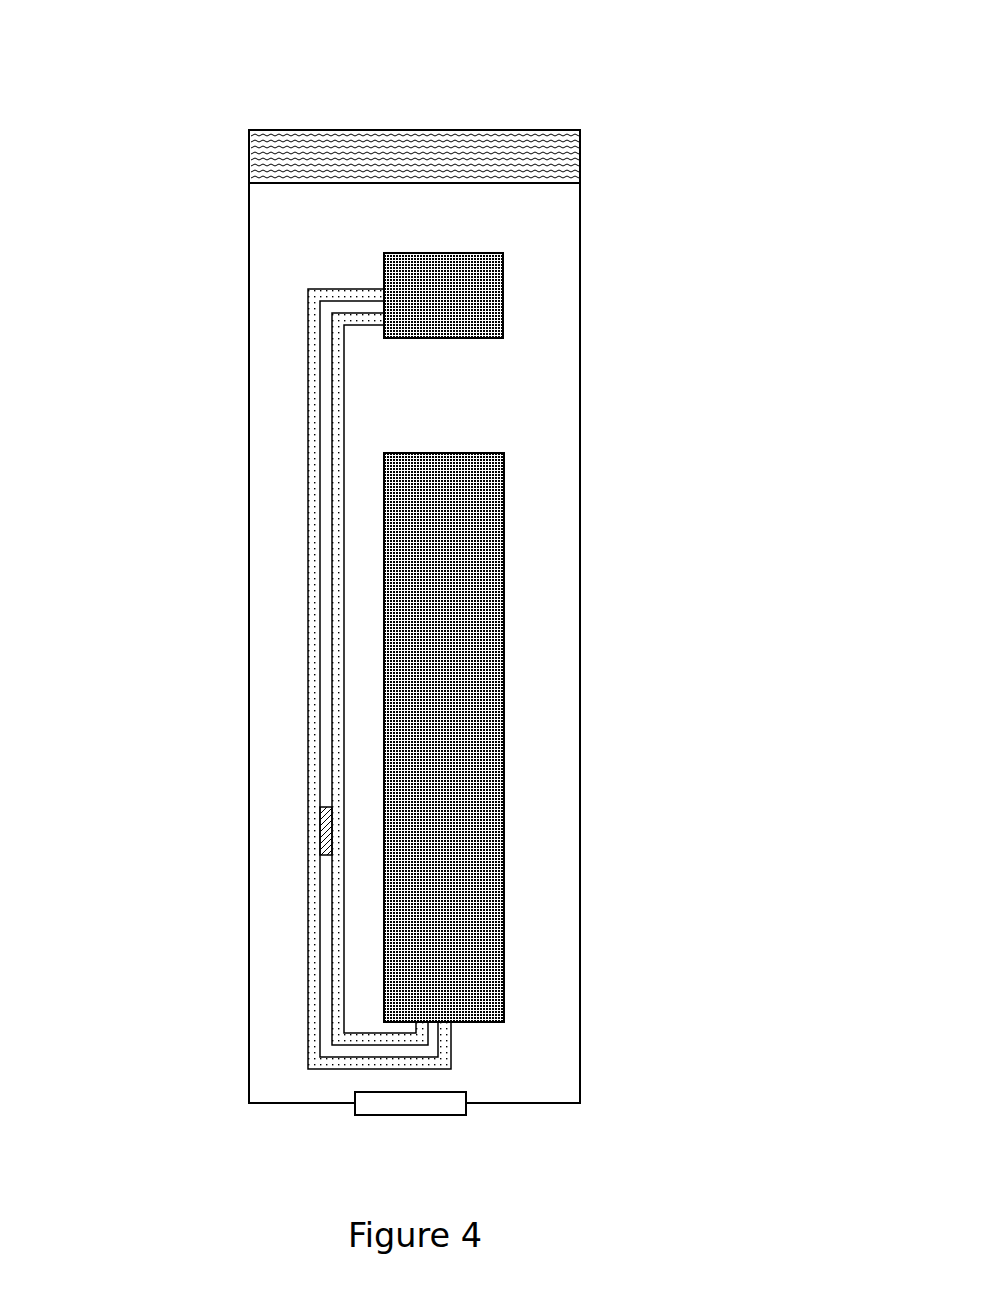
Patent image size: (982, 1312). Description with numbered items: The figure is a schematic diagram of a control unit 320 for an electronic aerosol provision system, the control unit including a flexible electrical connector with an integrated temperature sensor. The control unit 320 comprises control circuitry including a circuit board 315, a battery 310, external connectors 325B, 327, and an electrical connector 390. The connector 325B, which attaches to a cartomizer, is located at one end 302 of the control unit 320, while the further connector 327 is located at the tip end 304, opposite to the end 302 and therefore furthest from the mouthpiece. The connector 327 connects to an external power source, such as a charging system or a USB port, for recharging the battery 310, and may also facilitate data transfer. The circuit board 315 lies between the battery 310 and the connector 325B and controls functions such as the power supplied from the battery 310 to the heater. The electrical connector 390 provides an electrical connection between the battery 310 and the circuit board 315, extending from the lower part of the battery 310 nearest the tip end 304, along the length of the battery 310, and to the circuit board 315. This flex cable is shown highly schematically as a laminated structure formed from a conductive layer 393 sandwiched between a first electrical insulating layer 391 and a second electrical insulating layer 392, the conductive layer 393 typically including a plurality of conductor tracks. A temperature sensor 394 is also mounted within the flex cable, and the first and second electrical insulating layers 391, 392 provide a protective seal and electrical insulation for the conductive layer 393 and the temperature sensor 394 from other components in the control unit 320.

The end of control unit 302 is at (221, 192).
The tip end 304 is at (222, 1103).
The battery 310 is at (487, 808).
The circuit board 315 is at (487, 264).
The control unit 320 is at (652, 254).
The connector 325B is at (443, 153).
The connector 327 is at (438, 1104).
The electrical connector 390 is at (351, 679).
The first electrical insulating layer 391 is at (312, 335).
The second electrical insulating layer 392 is at (339, 406).
The conductive layer 393 is at (327, 606).
The temperature sensor 394 is at (323, 832).